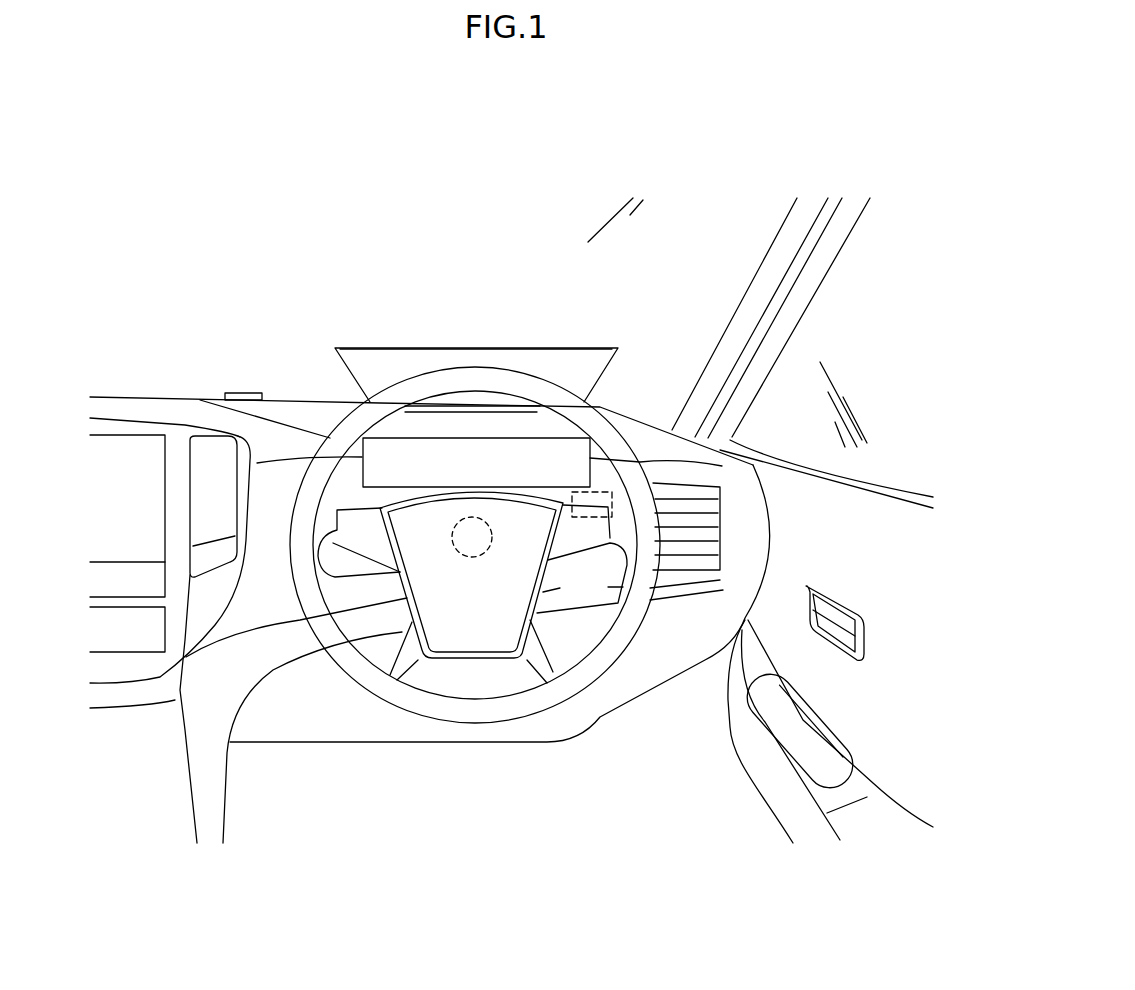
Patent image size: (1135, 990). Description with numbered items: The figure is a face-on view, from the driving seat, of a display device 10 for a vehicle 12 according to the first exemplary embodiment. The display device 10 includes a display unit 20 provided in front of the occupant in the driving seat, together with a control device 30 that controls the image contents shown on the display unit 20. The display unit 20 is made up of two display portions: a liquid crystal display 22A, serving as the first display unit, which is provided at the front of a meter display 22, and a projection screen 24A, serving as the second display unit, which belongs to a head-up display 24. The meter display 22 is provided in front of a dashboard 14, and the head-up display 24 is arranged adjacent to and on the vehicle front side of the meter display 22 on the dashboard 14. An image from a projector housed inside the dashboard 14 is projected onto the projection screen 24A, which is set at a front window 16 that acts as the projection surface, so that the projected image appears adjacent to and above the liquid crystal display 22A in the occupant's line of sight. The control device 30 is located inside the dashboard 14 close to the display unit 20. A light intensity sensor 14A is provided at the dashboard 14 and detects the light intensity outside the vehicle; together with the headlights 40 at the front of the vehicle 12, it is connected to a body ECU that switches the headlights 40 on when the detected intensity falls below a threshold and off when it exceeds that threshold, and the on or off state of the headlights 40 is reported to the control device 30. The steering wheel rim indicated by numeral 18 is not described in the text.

The display device 10 is at (672, 309).
The vehicle 12 is at (609, 193).
The dashboard 14 is at (290, 412).
The light intensity sensor 14A is at (237, 392).
The front window 16 is at (653, 373).
The steering wheel rim 18 is at (570, 680).
The display unit 20 is at (609, 333).
The meter display 22 is at (422, 458).
The liquid crystal display 22A is at (362, 500).
The head-up display 24 is at (416, 342).
The projection screen 24A is at (503, 345).
The control device 30 is at (612, 495).
The headlights 40 is at (475, 556).